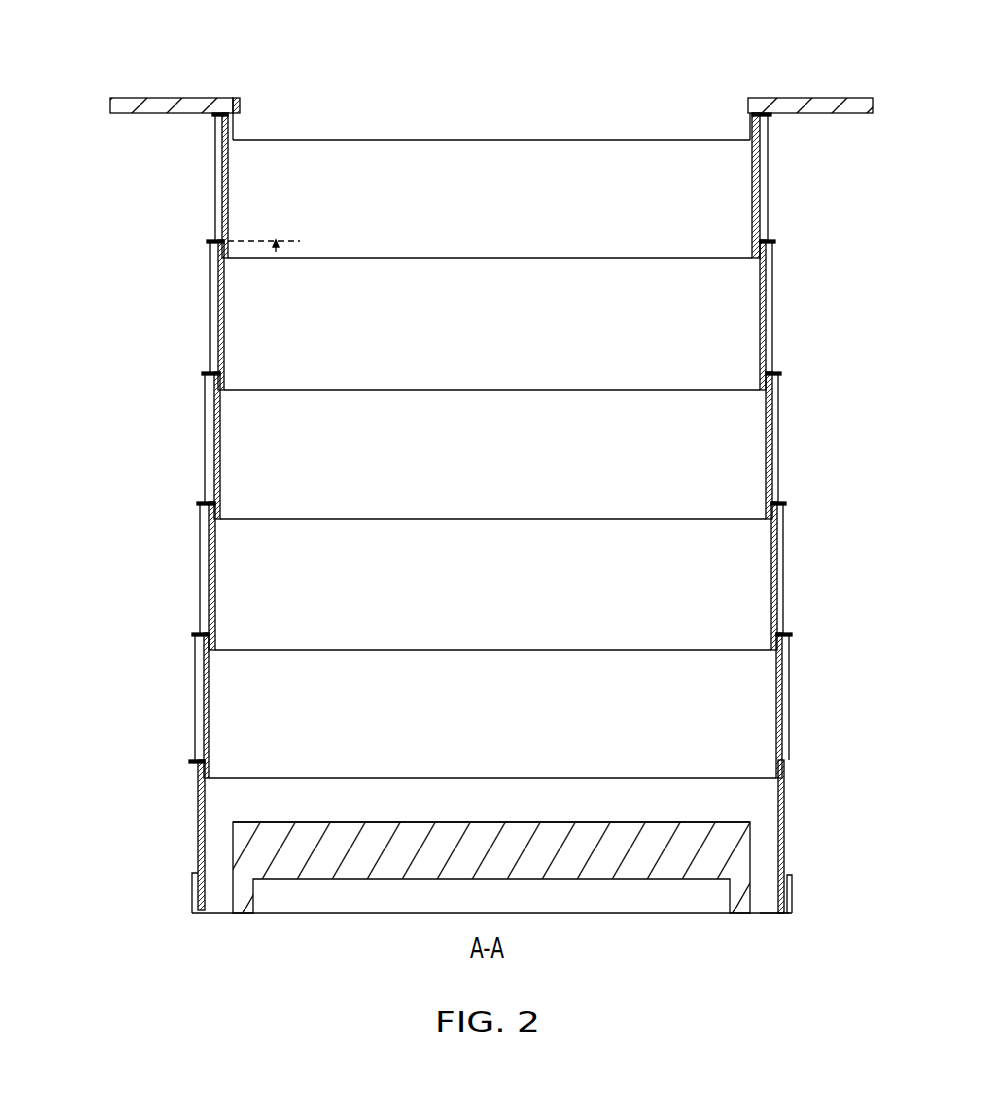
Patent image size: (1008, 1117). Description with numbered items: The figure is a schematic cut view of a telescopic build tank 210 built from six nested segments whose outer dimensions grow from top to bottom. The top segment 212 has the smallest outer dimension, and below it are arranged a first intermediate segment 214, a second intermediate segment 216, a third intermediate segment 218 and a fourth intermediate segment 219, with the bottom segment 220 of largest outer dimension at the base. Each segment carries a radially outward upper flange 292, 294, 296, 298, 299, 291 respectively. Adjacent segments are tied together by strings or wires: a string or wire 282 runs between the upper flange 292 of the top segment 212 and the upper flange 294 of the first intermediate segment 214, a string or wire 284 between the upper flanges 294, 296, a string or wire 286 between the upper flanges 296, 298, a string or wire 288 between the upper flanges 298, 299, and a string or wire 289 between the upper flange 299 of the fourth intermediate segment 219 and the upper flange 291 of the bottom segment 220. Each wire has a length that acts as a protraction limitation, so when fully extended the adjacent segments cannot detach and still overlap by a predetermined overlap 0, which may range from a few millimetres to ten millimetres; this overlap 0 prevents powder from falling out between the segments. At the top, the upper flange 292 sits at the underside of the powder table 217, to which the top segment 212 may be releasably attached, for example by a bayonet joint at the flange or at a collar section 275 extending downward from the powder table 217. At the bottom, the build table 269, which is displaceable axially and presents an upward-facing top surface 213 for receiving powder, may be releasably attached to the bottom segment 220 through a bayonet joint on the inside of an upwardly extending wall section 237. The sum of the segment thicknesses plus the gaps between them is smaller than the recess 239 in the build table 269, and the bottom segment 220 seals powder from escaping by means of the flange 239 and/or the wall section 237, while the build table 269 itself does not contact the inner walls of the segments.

The telescopic build tank 210 is at (126, 321).
The powder table 217 is at (797, 90).
The collar section 275 is at (238, 113).
The top segment 212 is at (766, 205).
The first intermediate segment 214 is at (770, 323).
The second intermediate segment 216 is at (775, 453).
The third intermediate segment 218 is at (780, 573).
The fourth intermediate segment 219 is at (788, 706).
The bottom segment 220 is at (787, 833).
The wall section 237 is at (795, 900).
The recess 239 is at (770, 913).
The build table 269 is at (505, 845).
The top surface 213 is at (625, 822).
The string or wire 282 is at (214, 173).
The string or wire 284 is at (208, 292).
The string or wire 286 is at (203, 433).
The string or wire 288 is at (198, 566).
The string or wire 289 is at (193, 687).
The upper flange 292 is at (213, 116).
The upper flange 294 is at (208, 241).
The upper flange 296 is at (205, 372).
The upper flange 298 is at (200, 500).
The upper flange 299 is at (195, 633).
The upper flange 291 is at (190, 760).
The overlap 0 is at (278, 251).